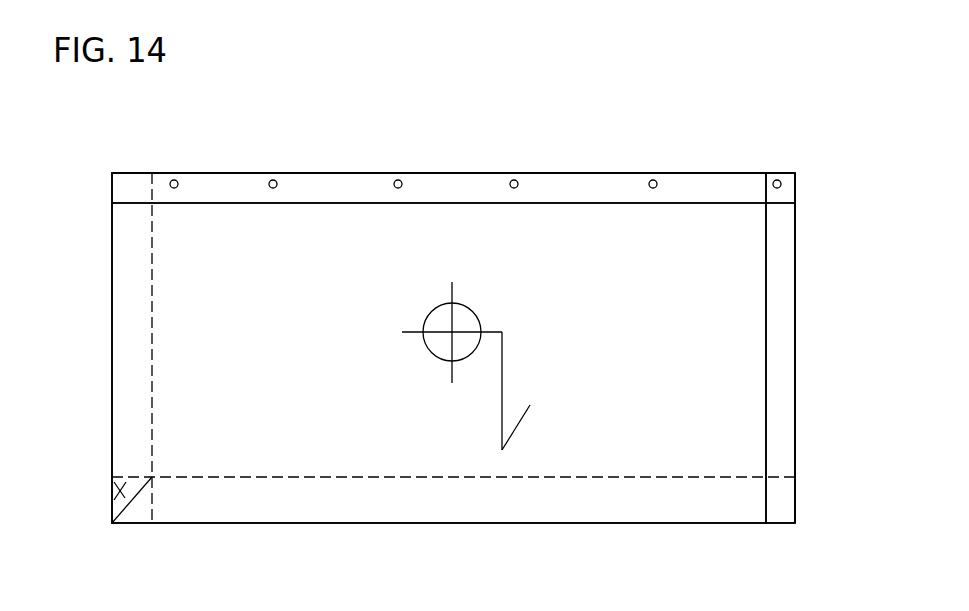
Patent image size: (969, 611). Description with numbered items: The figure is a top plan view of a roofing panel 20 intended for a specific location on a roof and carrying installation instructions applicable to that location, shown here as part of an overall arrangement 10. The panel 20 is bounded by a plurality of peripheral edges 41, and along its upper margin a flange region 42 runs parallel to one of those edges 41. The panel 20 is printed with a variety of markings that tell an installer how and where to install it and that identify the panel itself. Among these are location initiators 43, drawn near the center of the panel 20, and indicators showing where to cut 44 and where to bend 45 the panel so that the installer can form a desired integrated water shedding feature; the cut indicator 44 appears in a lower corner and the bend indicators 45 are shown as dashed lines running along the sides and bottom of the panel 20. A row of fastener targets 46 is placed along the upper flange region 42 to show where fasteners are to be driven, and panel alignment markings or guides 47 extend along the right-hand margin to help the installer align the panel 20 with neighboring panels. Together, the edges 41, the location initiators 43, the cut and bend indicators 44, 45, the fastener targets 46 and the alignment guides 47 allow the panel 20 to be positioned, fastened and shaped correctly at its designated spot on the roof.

The display device 10 is at (688, 95).
The roofing panel 20 is at (573, 157).
The peripheral edges 41 is at (462, 173).
The upper flange 42 is at (188, 173).
The location initiators 43 is at (473, 314).
The indicator of where to cut 44 is at (134, 509).
The indicator of where to bend 45 is at (152, 444).
The fastener targets 46 is at (777, 180).
The panel alignment markings or guides 47 is at (796, 346).